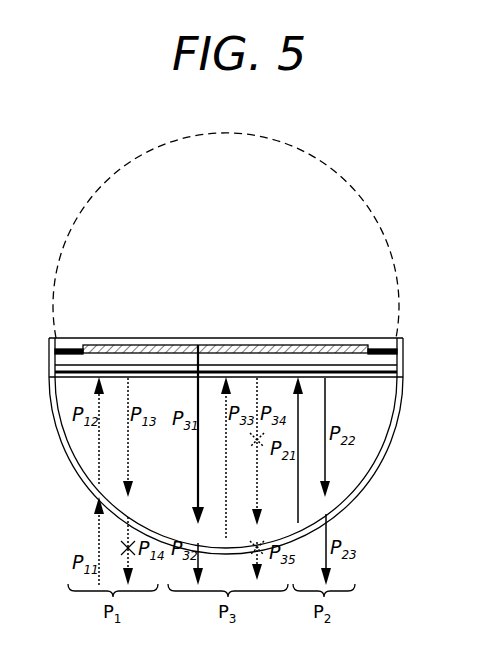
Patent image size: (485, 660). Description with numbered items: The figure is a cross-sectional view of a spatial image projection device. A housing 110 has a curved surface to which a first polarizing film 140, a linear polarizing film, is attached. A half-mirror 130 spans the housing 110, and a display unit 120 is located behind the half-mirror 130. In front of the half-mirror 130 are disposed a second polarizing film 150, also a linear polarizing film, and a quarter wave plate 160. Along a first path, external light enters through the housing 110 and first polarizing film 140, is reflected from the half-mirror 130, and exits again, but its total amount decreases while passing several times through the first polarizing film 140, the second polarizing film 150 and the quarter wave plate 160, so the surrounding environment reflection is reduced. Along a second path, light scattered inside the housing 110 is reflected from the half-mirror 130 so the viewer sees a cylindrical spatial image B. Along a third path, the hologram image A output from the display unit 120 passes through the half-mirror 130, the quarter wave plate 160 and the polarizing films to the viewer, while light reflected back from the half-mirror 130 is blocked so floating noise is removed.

The housing 110 is at (353, 492).
The display unit 120 is at (381, 348).
The half-mirror 130 is at (375, 374).
The first polarizing film 140 is at (343, 504).
The second polarizing film 150 is at (357, 350).
The quarter wave plate 160 is at (342, 378).
The hologram image A is at (218, 195).
The cylindrical spatial image B is at (100, 347).